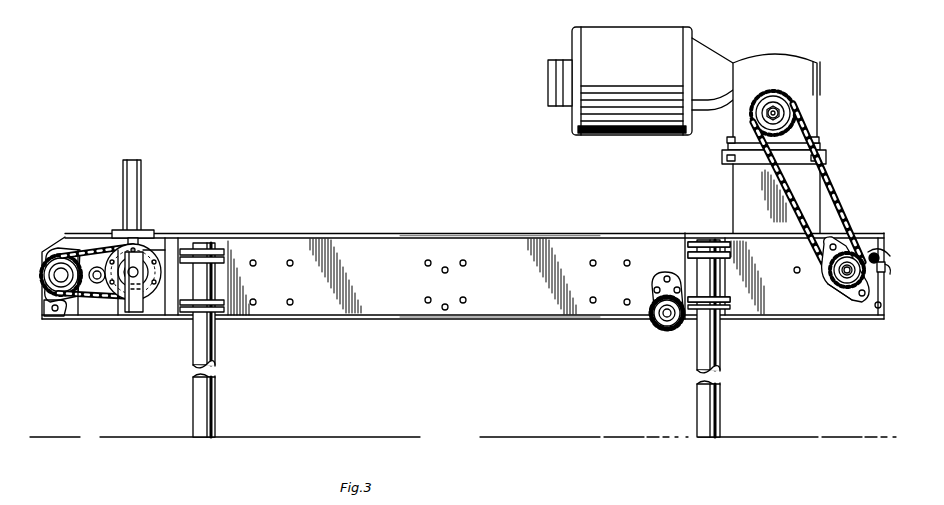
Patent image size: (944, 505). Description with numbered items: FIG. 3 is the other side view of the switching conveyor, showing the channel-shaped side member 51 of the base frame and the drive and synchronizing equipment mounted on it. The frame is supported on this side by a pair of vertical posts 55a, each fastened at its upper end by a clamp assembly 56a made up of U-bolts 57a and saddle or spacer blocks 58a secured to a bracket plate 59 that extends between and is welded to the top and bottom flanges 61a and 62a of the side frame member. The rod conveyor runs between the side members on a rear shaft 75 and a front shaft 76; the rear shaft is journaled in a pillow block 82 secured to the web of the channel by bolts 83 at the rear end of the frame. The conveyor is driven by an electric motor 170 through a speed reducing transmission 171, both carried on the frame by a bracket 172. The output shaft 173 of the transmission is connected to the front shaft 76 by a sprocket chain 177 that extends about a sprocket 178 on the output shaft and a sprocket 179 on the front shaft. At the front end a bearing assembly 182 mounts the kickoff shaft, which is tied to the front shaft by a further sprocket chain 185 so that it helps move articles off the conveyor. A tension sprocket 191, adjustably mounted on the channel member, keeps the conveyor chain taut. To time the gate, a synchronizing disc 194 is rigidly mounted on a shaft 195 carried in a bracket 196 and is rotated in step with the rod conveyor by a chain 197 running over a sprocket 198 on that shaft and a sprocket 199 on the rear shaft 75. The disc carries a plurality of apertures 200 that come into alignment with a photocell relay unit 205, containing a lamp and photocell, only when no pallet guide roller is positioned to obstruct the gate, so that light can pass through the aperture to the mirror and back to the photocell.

The side member 51 is at (537, 303).
The post 55a is at (217, 397).
The clamp assembly 56a is at (722, 237).
The U-bolt 57a is at (705, 240).
The saddle block 58a is at (688, 228).
The bracket plate 59 is at (685, 262).
The top flange 61a is at (495, 237).
The bottom flange 62a is at (513, 311).
The rear shaft 75 is at (55, 252).
The front shaft 76 is at (858, 256).
The pillow block 82 is at (853, 295).
The bolt 83 is at (867, 298).
The electric motor 170 is at (632, 5).
The speed reducing transmission 171 is at (762, 58).
The bracket 172 is at (722, 173).
The output shaft 173 is at (788, 96).
The sprocket chain 177 is at (847, 188).
The sprocket 178 is at (793, 128).
The sprocket 179 is at (837, 242).
The bearing assembly 182 is at (883, 244).
The sprocket chain 185 is at (903, 266).
The tension sprocket 191 is at (653, 323).
The synchronizing disc 194 is at (160, 258).
The shaft 195 is at (118, 250).
The bracket 196 is at (137, 303).
The chain 197 is at (78, 298).
The sprocket 198 is at (113, 300).
The sprocket 199 is at (62, 246).
The aperture 200 is at (170, 260).
The photocell relay unit 205 is at (147, 238).